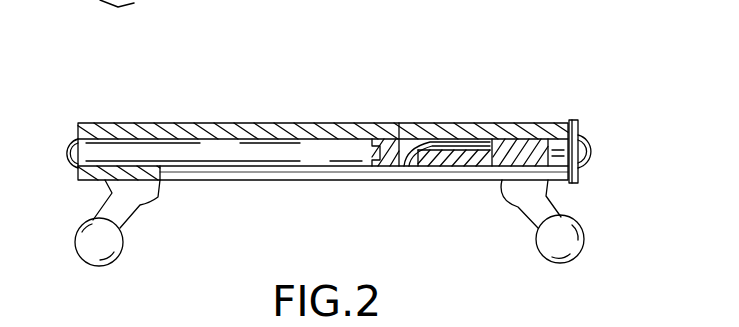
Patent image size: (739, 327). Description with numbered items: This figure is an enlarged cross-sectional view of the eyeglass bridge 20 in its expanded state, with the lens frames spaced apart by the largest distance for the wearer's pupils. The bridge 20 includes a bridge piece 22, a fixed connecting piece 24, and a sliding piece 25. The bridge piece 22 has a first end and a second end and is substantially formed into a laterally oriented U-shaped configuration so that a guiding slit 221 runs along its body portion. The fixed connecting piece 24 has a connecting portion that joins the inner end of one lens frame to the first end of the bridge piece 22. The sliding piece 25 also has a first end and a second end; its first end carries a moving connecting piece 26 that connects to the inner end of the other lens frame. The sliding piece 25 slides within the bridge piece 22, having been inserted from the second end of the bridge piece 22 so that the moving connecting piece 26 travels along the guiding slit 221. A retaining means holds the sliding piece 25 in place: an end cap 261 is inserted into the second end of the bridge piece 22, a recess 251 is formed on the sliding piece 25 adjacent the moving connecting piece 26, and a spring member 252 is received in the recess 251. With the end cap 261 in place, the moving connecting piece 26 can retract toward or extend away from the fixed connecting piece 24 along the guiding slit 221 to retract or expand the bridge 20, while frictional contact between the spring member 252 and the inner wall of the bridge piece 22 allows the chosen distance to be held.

The bridge 20 is at (362, 152).
The bridge piece 22 is at (155, 123).
The guiding slit 221 is at (330, 178).
The fixed connecting piece 24 is at (125, 228).
The sliding piece 25 is at (352, 139).
The recess 251 is at (490, 139).
The spring member 252 is at (450, 139).
The moving connecting piece 26 is at (530, 225).
The end cap 261 is at (592, 148).